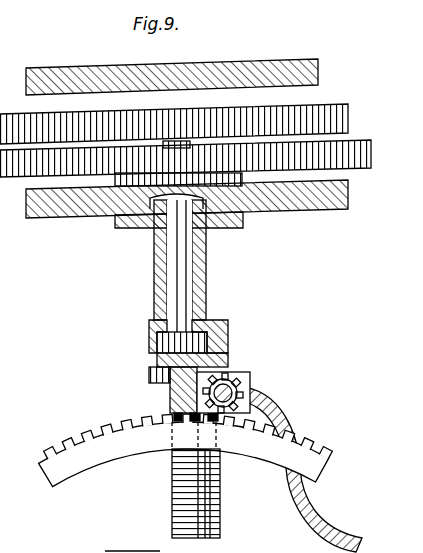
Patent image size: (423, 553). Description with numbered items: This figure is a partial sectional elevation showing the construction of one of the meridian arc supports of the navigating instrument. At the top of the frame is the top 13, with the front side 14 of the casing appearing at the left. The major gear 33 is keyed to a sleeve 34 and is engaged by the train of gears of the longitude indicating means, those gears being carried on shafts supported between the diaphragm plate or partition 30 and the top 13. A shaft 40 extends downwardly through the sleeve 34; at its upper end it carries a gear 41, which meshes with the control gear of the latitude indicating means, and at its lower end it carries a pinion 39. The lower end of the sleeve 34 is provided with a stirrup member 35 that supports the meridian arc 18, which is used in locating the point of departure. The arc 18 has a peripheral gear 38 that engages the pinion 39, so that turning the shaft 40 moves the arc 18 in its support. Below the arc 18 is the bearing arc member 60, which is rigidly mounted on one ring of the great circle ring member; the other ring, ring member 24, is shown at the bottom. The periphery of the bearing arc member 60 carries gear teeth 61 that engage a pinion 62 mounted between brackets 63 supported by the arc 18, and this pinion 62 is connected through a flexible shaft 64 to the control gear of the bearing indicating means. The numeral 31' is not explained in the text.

The top 13 is at (270, 56).
The gear 41 is at (326, 106).
The major gear 33 is at (14, 178).
The diaphragm plate or partition 30 is at (313, 210).
The sleeve 34 is at (162, 268).
The shaft 40 is at (178, 277).
The front side 14 is at (9, 288).
The pinion 39 is at (226, 322).
The stirrup member 35 is at (228, 336).
The peripheral gear 38 is at (228, 354).
The bracket 63 is at (248, 378).
The pinion 62 is at (246, 396).
The meridian arc 18 is at (178, 395).
The gear teeth 61 is at (85, 440).
The flexible shaft 64 is at (292, 440).
The bearing arc member 60 is at (146, 452).
The arm 31' is at (128, 541).
The ring member 24 is at (99, 548).